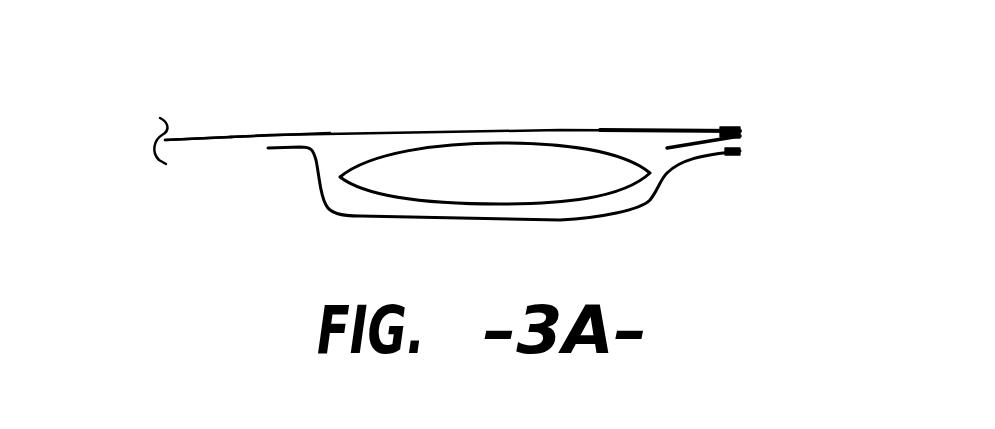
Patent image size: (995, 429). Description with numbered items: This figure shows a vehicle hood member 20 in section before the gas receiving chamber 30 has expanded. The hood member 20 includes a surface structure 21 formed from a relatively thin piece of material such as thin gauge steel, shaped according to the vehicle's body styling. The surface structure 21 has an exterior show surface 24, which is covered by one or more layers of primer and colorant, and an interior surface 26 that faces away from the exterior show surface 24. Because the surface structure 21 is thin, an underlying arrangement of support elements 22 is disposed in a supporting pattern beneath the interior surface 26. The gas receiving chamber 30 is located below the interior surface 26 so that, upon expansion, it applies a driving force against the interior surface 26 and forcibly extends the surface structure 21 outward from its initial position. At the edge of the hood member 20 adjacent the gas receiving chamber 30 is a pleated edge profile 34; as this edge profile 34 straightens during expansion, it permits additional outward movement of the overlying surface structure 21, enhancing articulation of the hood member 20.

The hood member 20 is at (196, 90).
The surface structure 21 is at (568, 128).
The support elements 22 is at (600, 218).
The exterior show surface 24 is at (266, 130).
The interior surface 26 is at (228, 138).
The gas receiving chamber 30 is at (640, 187).
The pleated edge profile 34 is at (769, 118).